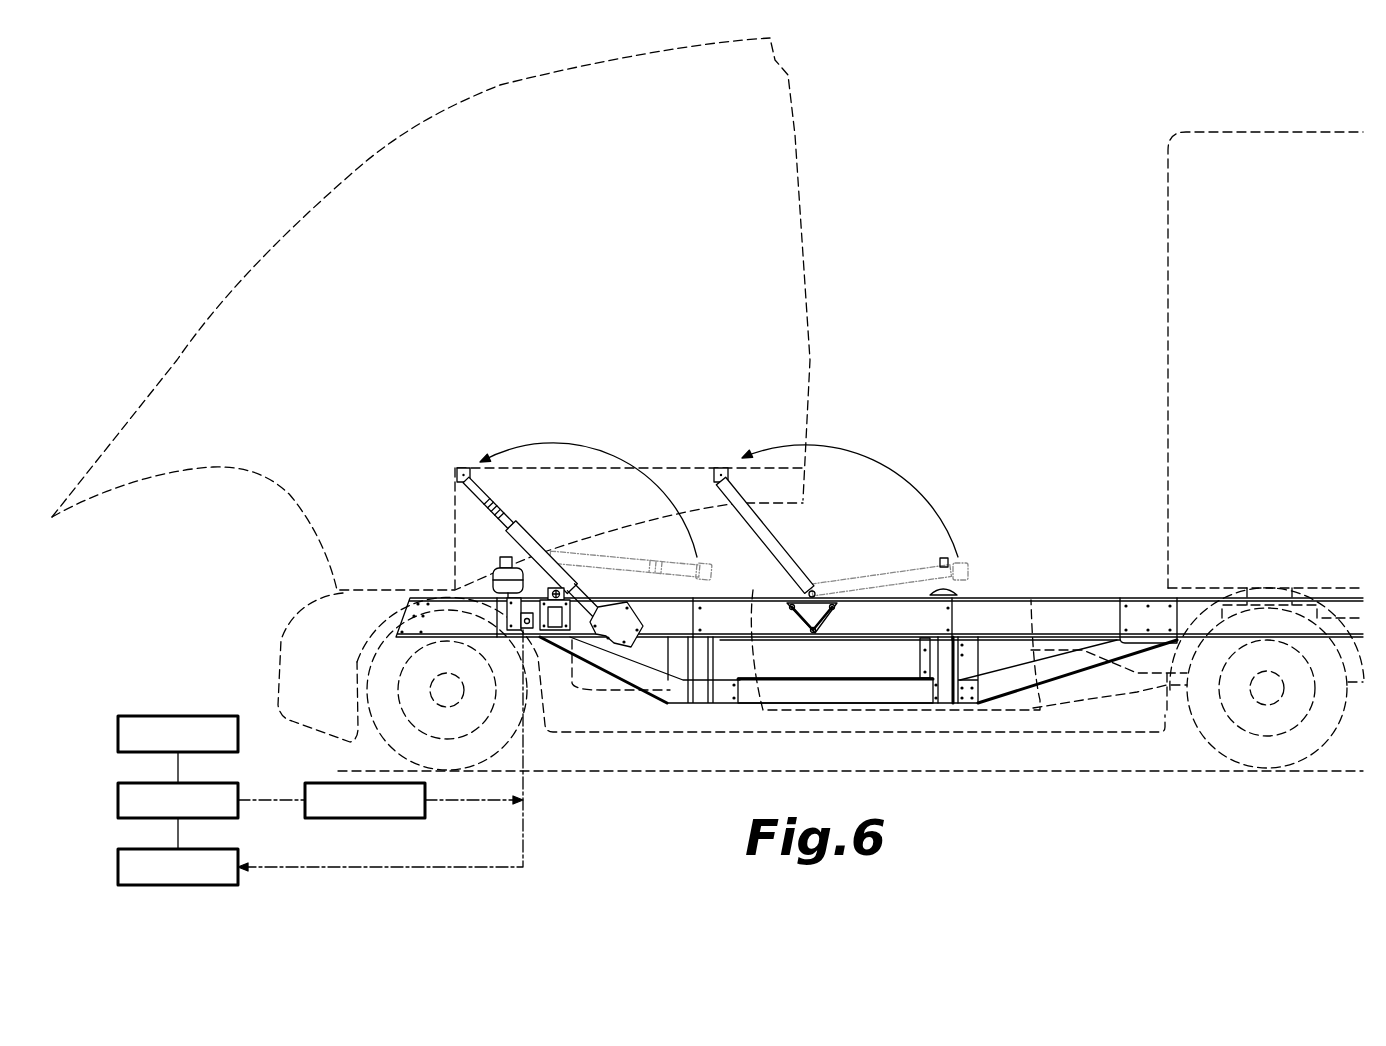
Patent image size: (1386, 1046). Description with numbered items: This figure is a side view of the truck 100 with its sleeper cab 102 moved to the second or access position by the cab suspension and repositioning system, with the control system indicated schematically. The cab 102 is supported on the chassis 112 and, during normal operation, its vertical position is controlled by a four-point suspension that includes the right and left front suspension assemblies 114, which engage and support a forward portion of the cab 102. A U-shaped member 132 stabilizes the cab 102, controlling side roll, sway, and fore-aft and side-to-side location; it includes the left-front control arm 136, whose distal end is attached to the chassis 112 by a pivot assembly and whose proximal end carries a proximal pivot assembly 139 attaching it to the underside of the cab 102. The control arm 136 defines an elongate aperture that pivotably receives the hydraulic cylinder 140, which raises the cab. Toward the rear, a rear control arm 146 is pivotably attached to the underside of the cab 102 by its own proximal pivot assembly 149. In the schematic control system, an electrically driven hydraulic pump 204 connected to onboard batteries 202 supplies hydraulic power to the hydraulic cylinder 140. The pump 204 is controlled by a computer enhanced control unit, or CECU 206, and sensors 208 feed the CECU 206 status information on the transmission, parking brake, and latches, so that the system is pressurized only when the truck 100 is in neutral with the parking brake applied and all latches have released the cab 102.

The truck 100 is at (1017, 289).
The sleeper cab 102 is at (795, 137).
The chassis 112 is at (403, 628).
The front suspension assemblies 114 is at (486, 573).
The U-shaped member 132 is at (508, 507).
The left-front control arm 136 is at (483, 490).
The proximal pivot assemblies 139 is at (462, 467).
The hydraulic cylinder 140 is at (550, 557).
The rear control arm 146 is at (778, 533).
The proximal pivot assembly 149 is at (721, 467).
The onboard batteries 202 is at (118, 733).
The hydraulic pump 204 is at (328, 783).
The computer enhanced control unit (CECU) 206 is at (118, 800).
The sensors 208 is at (118, 867).